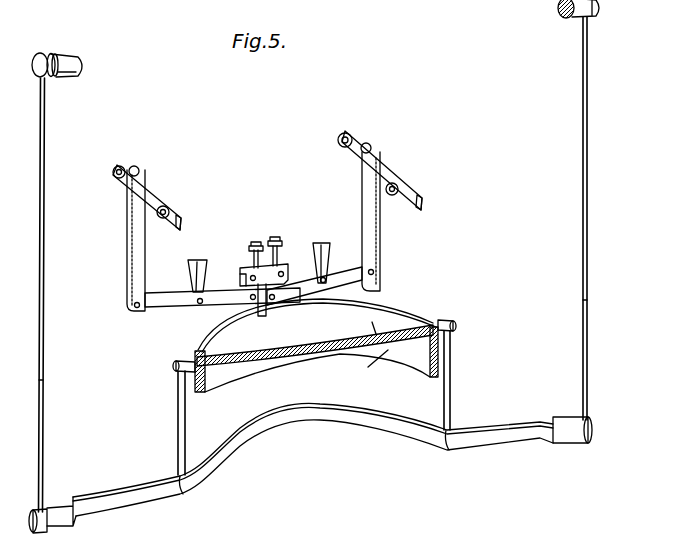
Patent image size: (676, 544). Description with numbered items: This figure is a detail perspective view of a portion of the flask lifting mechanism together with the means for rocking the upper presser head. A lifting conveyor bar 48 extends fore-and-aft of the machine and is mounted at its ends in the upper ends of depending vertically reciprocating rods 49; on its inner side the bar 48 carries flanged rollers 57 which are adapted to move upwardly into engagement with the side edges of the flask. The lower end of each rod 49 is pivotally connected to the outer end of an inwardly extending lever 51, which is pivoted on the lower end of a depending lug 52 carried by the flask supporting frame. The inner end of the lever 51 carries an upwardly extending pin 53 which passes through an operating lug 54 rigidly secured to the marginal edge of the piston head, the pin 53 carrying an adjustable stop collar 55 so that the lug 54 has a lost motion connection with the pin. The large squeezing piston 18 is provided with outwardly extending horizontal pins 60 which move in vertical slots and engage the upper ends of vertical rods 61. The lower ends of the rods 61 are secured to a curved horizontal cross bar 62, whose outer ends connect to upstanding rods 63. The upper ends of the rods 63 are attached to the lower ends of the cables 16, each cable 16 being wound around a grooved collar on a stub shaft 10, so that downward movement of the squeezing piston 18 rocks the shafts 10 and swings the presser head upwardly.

The stub shaft 10 is at (83, 66).
The cable 16 is at (43, 126).
The squeezing piston 18 is at (352, 343).
The lifting conveyor bar 48 is at (150, 204).
The vertically reciprocating rod 49 is at (128, 246).
The lever 51 is at (167, 300).
The depending lug 52 is at (200, 262).
The pin 53 is at (244, 268).
The operating lug 54 is at (261, 308).
The adjustable stop collar 55 is at (277, 238).
The flanged roller 57 is at (337, 142).
The horizontal pin 60 is at (175, 362).
The vertical rod 61 is at (178, 400).
The cross bar 62 is at (306, 414).
The upstanding rod 63 is at (42, 438).